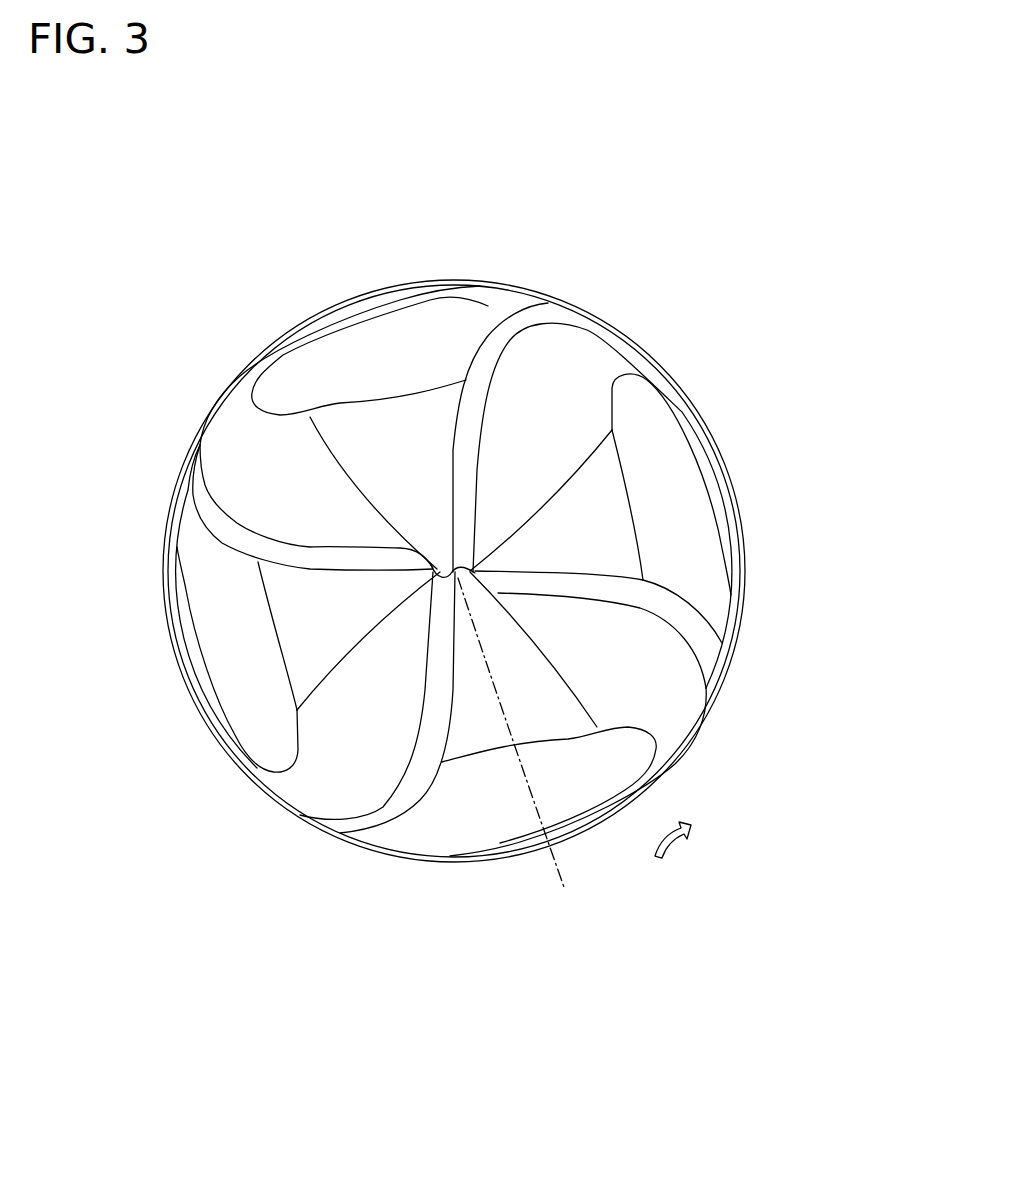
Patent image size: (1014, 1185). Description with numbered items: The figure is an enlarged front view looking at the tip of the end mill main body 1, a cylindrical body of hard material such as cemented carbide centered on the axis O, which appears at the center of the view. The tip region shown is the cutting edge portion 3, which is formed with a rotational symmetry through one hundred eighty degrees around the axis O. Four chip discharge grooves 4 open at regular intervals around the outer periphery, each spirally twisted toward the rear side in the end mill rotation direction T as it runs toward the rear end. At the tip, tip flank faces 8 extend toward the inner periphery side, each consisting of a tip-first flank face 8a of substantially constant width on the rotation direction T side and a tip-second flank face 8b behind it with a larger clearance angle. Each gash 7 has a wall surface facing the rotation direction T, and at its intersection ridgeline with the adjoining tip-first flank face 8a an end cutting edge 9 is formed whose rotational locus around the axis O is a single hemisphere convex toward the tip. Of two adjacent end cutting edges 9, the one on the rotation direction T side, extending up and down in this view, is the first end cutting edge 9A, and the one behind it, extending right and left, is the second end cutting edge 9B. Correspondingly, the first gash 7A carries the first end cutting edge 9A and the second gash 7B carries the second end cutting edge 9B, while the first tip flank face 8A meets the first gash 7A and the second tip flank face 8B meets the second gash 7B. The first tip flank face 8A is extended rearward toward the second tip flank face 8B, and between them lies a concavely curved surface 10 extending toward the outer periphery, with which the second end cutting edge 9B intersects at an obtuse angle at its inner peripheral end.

The end mill main body 1 is at (402, 571).
The cutting edge portion 3 is at (174, 360).
The chip discharge groove 4 is at (349, 343).
The gash 7 is at (442, 587).
The first gash 7A is at (431, 410).
The second gash 7B is at (622, 547).
The tip flank face 8 is at (433, 572).
The first tip flank face 8A is at (587, 182).
The second tip flank face 8B is at (773, 715).
The tip-first flank face 8a is at (505, 330).
The tip-second flank face 8b is at (562, 360).
The end cutting edge 9 is at (437, 582).
The first end cutting edge 9A is at (485, 343).
The second end cutting edge 9B is at (700, 605).
The concavely curved surface 10 is at (428, 575).
The axis O is at (523, 747).
The end mill rotation direction T is at (676, 852).